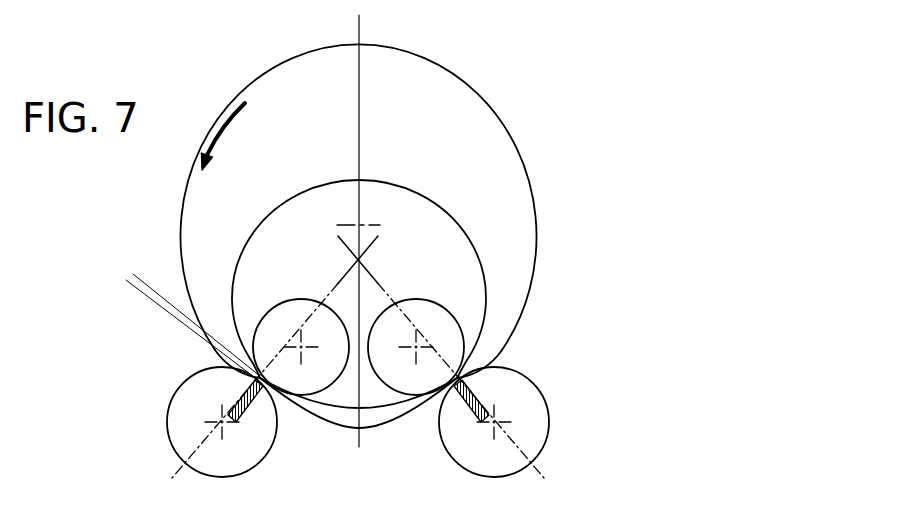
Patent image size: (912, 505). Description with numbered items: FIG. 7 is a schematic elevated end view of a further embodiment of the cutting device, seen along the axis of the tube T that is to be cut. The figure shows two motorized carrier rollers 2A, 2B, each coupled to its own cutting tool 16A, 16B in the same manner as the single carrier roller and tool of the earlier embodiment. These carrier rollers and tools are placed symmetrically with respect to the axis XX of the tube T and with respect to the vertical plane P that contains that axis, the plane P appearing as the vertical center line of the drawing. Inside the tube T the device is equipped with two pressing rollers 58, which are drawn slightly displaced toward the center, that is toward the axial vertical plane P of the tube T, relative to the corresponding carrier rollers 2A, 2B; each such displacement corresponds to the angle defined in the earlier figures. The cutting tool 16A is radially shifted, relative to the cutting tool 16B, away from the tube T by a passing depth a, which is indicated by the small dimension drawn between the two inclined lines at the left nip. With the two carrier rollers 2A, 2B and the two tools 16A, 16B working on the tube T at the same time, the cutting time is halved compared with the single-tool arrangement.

The tube T is at (514, 127).
The vertical plane P is at (360, 43).
The axis of the tube XX is at (392, 213).
The pressing roller 58 is at (308, 303).
The motorized carrier roller 2A is at (262, 442).
The motorized carrier roller 2B is at (538, 438).
The cutting tool 16A is at (238, 404).
The cutting tool 16B is at (482, 393).
The passing depth a is at (153, 269).